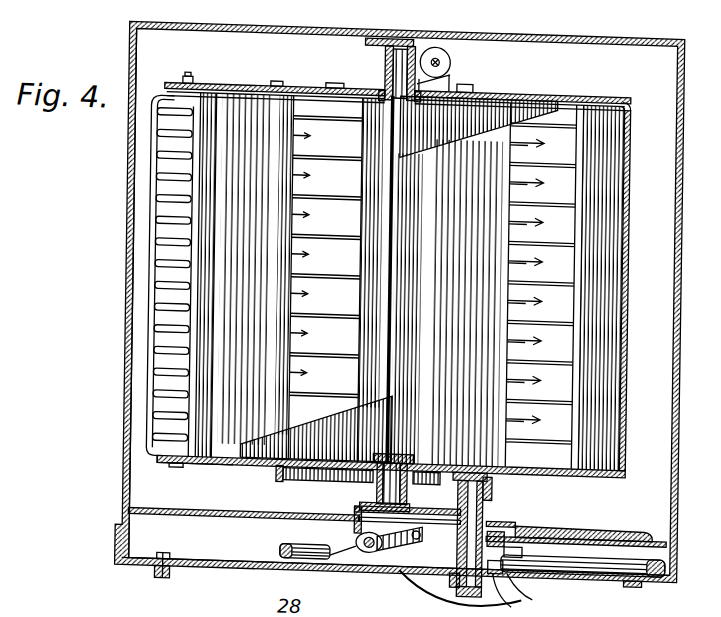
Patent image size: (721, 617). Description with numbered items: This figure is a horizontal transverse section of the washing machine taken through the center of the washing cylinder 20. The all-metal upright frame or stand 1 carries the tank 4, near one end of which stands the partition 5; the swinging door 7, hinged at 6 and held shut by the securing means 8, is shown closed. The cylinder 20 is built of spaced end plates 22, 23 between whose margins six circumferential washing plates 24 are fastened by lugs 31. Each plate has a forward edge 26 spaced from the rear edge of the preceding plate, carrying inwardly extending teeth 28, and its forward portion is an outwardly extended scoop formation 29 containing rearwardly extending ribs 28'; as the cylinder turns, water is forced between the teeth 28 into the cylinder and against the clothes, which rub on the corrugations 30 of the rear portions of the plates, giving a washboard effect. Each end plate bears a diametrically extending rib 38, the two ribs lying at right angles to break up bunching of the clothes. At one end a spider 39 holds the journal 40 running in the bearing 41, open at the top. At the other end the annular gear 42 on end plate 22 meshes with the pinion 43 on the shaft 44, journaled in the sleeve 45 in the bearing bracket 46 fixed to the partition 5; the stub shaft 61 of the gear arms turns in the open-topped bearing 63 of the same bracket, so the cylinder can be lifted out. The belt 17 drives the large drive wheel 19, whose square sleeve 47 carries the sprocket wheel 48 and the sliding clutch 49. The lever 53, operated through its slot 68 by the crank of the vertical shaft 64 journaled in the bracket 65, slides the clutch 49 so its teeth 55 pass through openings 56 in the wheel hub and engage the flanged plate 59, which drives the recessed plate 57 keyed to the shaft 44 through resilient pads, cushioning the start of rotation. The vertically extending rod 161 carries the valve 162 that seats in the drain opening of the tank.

The upright frame or stand 1 is at (408, 302).
The tank 4 is at (132, 294).
The partition 5 is at (178, 506).
The hinge 6 is at (649, 562).
The swinging door 7 is at (253, 562).
The door securing means 8 is at (169, 573).
The belt 17 is at (288, 540).
The large drive wheel 19 is at (607, 540).
The washing cylinder 20 is at (579, 456).
The end plate 22 is at (231, 456).
The end plate 23 is at (224, 77).
The circumferential washing plates 24 is at (631, 175).
The forward edge 26 is at (159, 163).
The teeth 28 is at (309, 279).
The rearwardly extending ribs 28' is at (433, 280).
The scoop formation 29 is at (163, 357).
The corrugations 30 is at (269, 241).
The lugs 31 is at (186, 71).
The diametrically extending rib 38 is at (500, 88).
The spider 39 is at (439, 70).
The journal 40 is at (394, 59).
The bearing 41 is at (412, 28).
The annular gear 42 is at (297, 470).
The pinion 43 is at (499, 481).
The shaft 44 is at (472, 482).
The sleeve 45 is at (506, 504).
The bearing bracket 46 is at (620, 508).
The sleeve 47 is at (497, 595).
The sprocket wheel 48 is at (503, 522).
The sliding clutch 49 is at (521, 533).
The lever 53 is at (408, 529).
The clutch teeth 55 is at (526, 558).
The openings 56 is at (525, 595).
The recessed plate 57 is at (460, 593).
The flanged plate 59 is at (464, 563).
The stub shaft 61 is at (386, 466).
The bearing 63 is at (383, 488).
The vertical shaft 64 is at (380, 542).
The bracket 65 is at (370, 518).
The slot 68 is at (380, 538).
The vertically extending rod 161 is at (440, 44).
The valve 162 is at (449, 42).